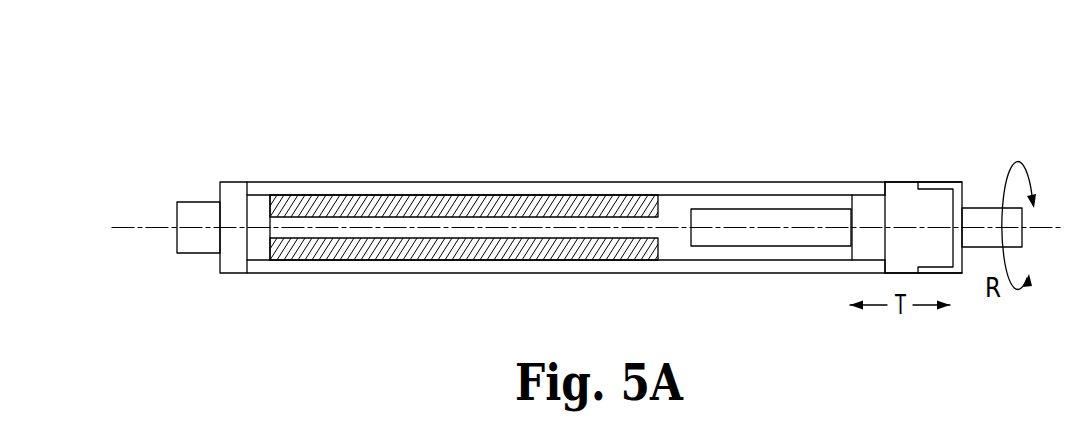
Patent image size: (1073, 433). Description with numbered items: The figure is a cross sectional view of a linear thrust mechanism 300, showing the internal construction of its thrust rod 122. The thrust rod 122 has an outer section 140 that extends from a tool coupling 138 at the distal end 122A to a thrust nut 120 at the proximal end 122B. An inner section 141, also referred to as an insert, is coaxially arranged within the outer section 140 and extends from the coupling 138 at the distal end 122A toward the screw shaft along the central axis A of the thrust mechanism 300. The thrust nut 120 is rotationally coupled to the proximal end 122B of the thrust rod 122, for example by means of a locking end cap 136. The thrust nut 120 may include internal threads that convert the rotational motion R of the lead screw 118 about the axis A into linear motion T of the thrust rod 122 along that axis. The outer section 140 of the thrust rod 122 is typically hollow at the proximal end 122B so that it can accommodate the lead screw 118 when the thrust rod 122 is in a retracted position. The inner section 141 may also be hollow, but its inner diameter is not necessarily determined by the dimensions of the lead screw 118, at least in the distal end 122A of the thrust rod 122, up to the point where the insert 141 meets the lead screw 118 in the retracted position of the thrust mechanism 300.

The linear thrust mechanism 300 is at (258, 118).
The tool coupling 138 is at (195, 208).
The distal end 122A is at (275, 166).
The thrust rod 122 is at (604, 214).
The outer section 140 is at (537, 190).
The inner section 141 is at (463, 205).
The lead screw 118 is at (729, 215).
The proximal end 122B is at (854, 167).
The thrust nut 120 is at (902, 215).
The locking end cap 136 is at (957, 188).